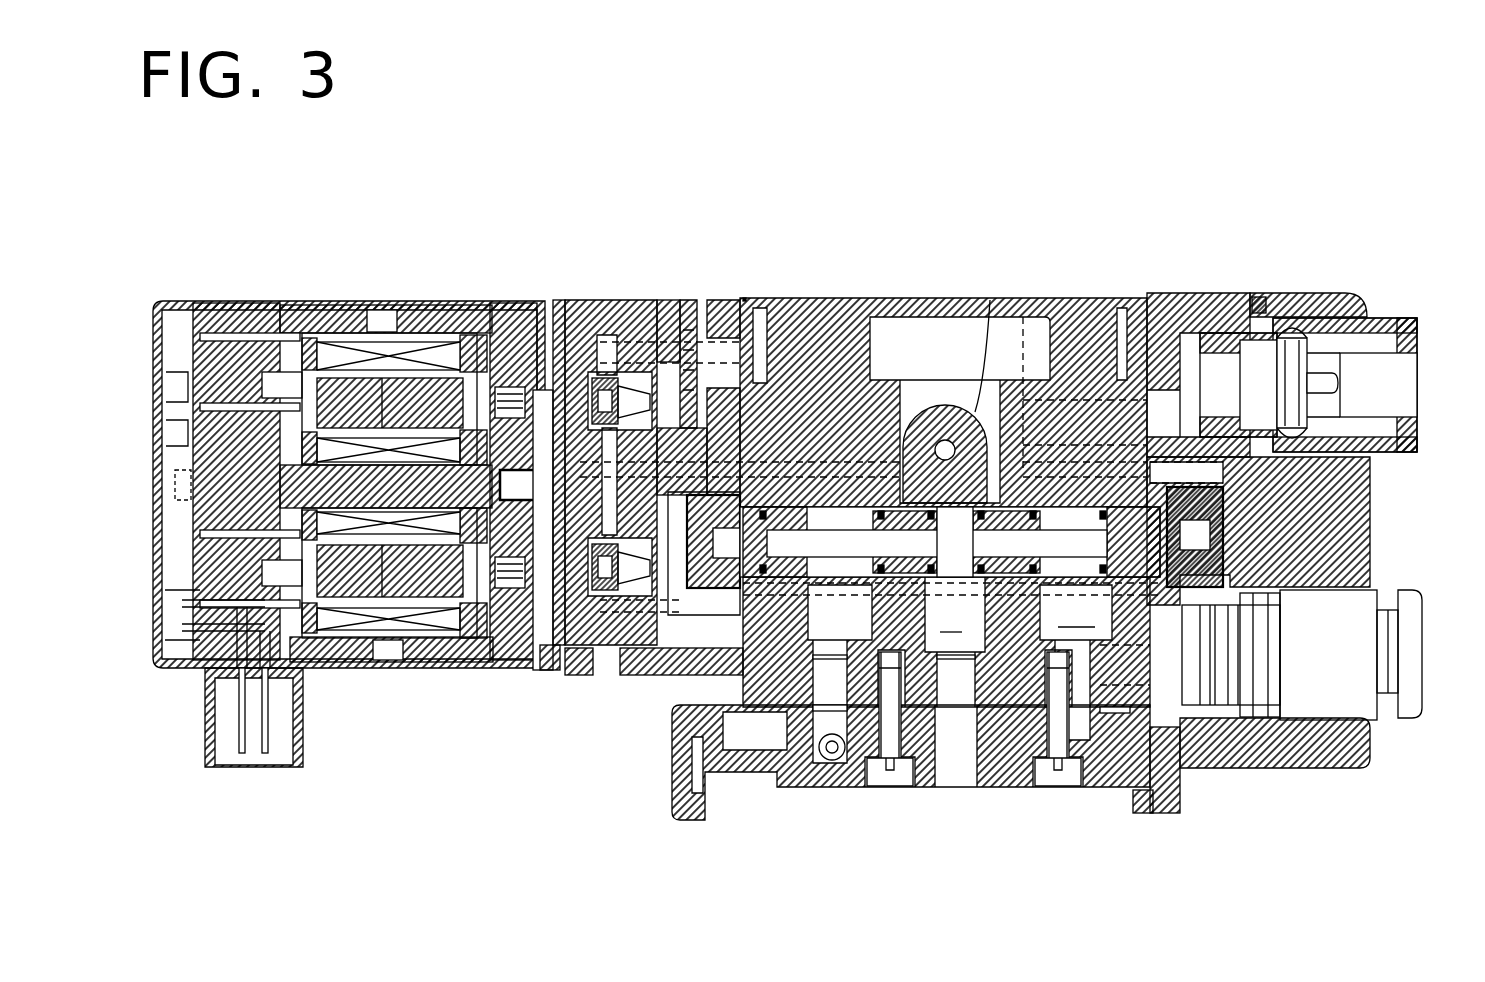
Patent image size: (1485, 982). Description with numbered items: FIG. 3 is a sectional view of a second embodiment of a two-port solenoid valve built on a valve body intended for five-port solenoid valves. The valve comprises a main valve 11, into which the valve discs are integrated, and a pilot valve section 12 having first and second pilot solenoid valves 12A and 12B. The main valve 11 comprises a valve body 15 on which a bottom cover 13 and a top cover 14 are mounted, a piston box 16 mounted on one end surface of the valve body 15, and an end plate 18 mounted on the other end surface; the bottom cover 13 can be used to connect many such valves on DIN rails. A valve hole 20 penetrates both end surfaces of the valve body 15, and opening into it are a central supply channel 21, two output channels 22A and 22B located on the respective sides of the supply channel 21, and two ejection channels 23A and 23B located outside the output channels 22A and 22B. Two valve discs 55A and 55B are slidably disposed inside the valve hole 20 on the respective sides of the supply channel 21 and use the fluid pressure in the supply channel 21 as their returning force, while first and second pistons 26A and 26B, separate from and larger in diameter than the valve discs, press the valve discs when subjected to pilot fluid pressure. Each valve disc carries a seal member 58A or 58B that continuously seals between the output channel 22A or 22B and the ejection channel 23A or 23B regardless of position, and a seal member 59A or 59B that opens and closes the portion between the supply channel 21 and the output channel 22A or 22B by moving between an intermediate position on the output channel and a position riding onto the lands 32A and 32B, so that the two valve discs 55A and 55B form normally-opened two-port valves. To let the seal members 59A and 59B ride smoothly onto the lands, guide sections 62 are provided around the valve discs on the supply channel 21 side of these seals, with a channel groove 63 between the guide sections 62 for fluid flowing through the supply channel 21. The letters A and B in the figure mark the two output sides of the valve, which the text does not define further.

The main valve 11 is at (773, 172).
The pilot valve section 12 is at (359, 473).
The first pilot solenoid valve 12A is at (320, 303).
The second pilot solenoid valve 12B is at (347, 665).
The bottom cover 13 is at (1021, 743).
The top cover 14 is at (950, 446).
The valve body 15 is at (790, 392).
The piston box 16 is at (630, 300).
The end plate 18 is at (1299, 295).
The valve hole 20 is at (1098, 503).
The supply channel 21 is at (950, 542).
The first output channel 22A is at (898, 503).
The second output channel 22B is at (1010, 575).
The first ejection channel 23A is at (810, 622).
The second ejection channel 23B is at (1123, 700).
The first piston 26A is at (690, 568).
The second piston 26B is at (1225, 500).
The first land 32A is at (933, 710).
The second land 32B is at (977, 700).
The first valve disc 55A is at (882, 503).
The second valve disc 55B is at (1082, 503).
The first seal member 58A is at (853, 755).
The second seal member 58B is at (1053, 775).
The first opening/closing seal member 59A is at (881, 808).
The second opening/closing seal member 59B is at (987, 765).
The guide sections 62 is at (1003, 503).
The channel groove 63 is at (988, 420).
The output port A is at (1433, 366).
The output port B is at (1433, 626).